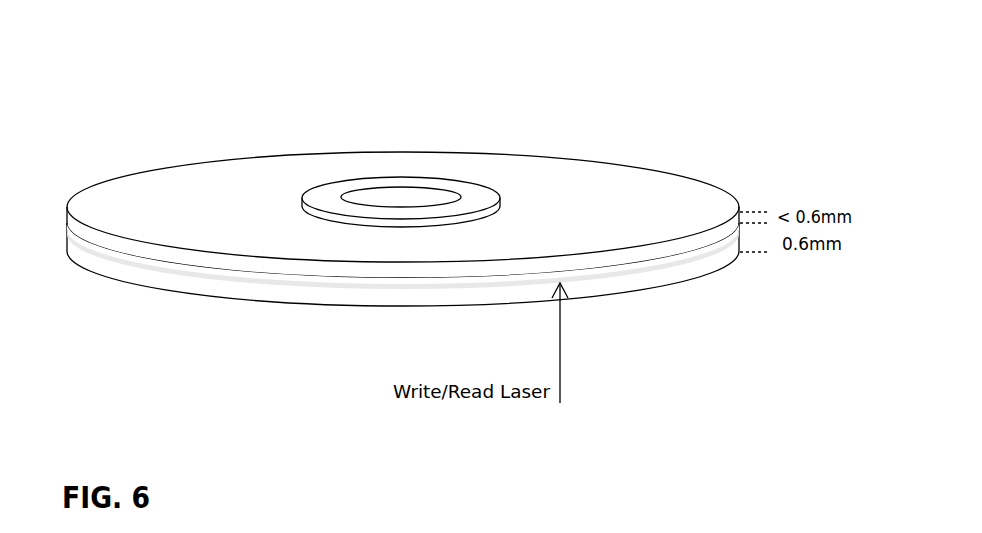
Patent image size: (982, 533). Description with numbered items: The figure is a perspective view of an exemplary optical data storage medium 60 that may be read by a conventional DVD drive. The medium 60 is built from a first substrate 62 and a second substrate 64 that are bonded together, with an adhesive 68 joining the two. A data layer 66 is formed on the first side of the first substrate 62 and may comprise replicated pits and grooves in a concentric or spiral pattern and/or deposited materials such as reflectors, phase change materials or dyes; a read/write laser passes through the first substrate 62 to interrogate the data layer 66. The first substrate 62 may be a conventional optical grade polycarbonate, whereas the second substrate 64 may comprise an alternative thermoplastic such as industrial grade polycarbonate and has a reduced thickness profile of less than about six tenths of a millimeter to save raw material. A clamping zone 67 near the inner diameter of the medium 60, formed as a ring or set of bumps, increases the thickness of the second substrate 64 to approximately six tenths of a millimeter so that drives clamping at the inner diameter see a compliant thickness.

The optical data storage medium 60 is at (577, 71).
The first substrate 62 is at (67, 249).
The second substrate 64 is at (67, 204).
The data layer 66 is at (676, 257).
The clamping zone 67 is at (477, 202).
The adhesive 68 is at (626, 262).